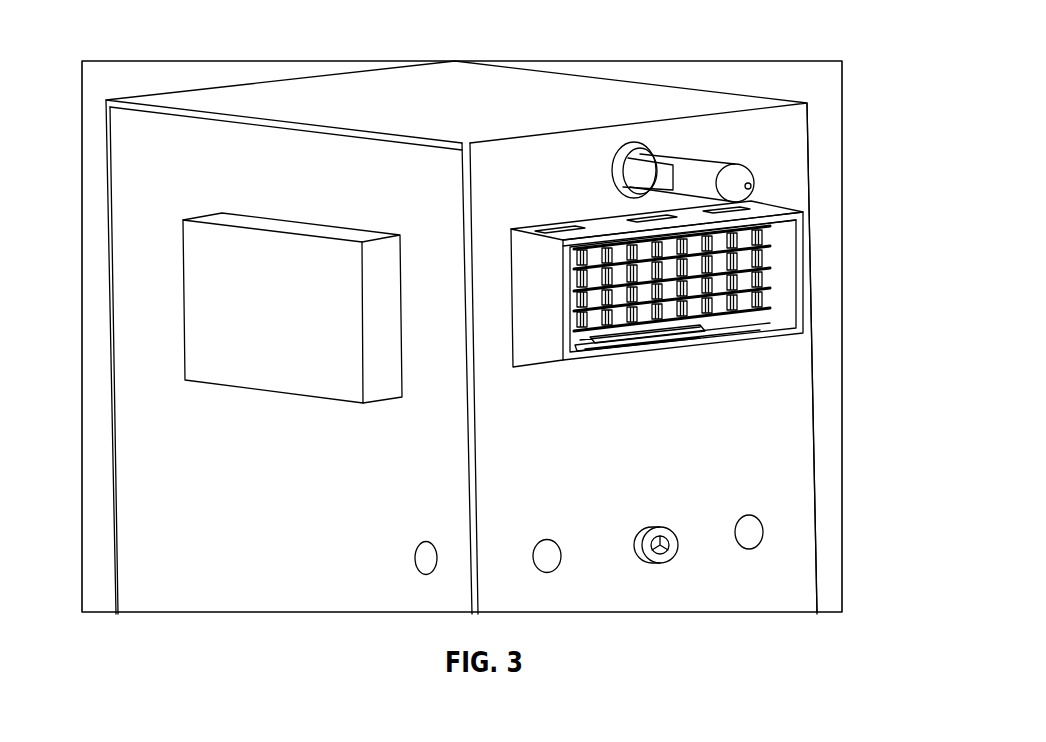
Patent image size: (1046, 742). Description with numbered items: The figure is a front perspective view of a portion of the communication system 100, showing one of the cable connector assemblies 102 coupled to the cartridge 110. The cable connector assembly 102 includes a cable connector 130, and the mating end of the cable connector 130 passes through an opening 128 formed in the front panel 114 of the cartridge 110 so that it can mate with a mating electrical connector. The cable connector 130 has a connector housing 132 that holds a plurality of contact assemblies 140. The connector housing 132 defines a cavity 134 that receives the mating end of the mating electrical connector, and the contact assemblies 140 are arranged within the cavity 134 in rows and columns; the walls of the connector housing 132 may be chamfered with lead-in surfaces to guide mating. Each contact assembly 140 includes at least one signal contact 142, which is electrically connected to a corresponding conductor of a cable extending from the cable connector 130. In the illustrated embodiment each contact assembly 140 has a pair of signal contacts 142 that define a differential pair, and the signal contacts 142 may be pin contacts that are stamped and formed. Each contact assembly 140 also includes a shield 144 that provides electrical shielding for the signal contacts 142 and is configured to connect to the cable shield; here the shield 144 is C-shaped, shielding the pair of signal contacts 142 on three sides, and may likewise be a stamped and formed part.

The communication system 100 is at (607, 52).
The cable connector assembly 102 is at (816, 262).
The cartridge 110 is at (137, 387).
The front panel 114 is at (767, 475).
The opening 128 is at (775, 200).
The cable connector 130 is at (792, 251).
The connector housing 132 is at (787, 337).
The cavity 134 is at (795, 317).
The contact assembly 140 is at (688, 343).
The signal contact 142 is at (667, 337).
The shield 144 is at (747, 277).